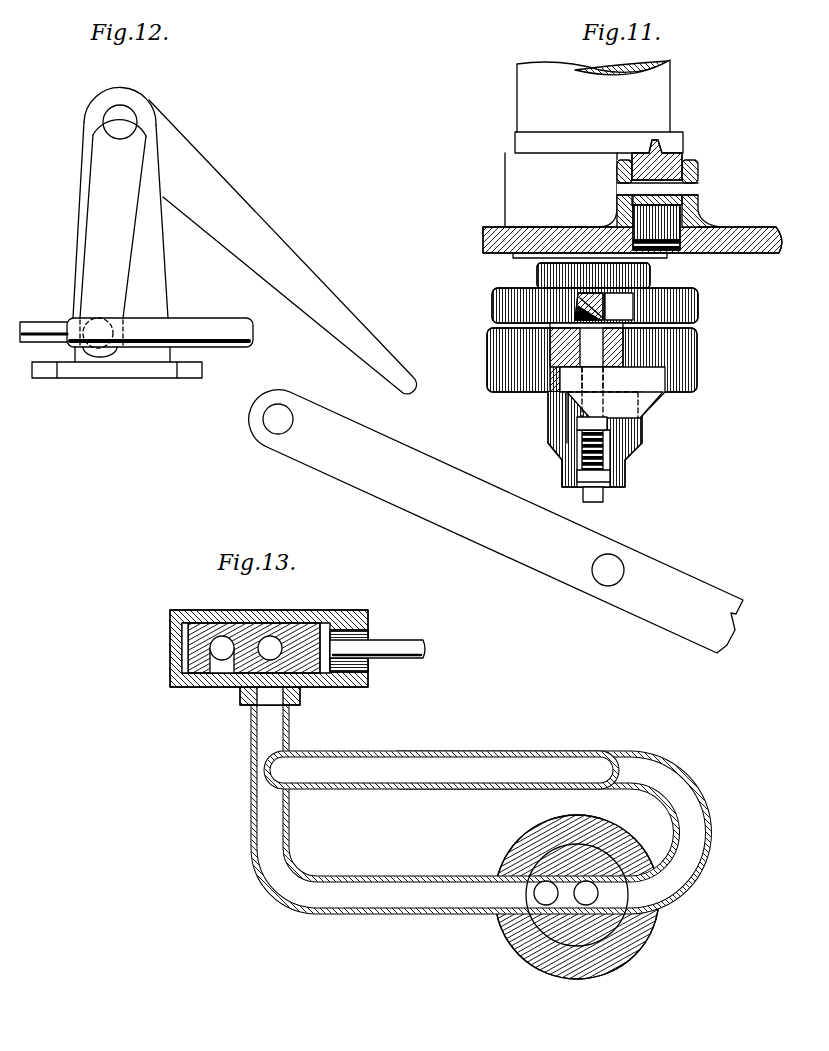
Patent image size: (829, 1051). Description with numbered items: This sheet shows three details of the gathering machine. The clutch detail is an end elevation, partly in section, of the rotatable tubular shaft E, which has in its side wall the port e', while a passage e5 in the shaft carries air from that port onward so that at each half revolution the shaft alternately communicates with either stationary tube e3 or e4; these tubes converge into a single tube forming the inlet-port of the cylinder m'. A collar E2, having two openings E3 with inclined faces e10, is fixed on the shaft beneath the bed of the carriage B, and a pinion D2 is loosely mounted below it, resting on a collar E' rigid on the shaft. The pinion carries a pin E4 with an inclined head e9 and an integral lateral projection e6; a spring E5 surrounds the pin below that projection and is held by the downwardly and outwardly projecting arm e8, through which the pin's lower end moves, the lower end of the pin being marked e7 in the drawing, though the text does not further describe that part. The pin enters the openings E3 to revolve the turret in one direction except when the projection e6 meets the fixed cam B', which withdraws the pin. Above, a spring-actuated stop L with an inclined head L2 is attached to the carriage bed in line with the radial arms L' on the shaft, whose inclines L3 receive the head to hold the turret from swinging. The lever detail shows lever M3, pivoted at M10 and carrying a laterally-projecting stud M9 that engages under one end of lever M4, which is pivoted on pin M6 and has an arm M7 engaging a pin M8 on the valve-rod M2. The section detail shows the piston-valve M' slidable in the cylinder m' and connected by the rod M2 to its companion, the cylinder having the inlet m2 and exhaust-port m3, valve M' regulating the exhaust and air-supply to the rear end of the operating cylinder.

In FIG. 12, the pin M6 is at (124, 114).
In FIG. 12, the arm M7 is at (93, 238).
In FIG. 12, the lever M4 is at (277, 244).
In FIG. 12, the rod M2 is at (197, 328).
In FIG. 13, the rod M2 is at (406, 647).
In FIG. 12, the pin M8 is at (104, 350).
In FIG. 12, the laterally-projecting stud M9 is at (292, 421).
In FIG. 12, the lever M3 is at (453, 526).
In FIG. 12, the pivot M10 is at (596, 563).
In FIG. 11, the carriage B is at (632, 225).
In FIG. 11, the incline L3 is at (617, 152).
In FIG. 11, the radial arm L' is at (599, 106).
In FIG. 11, the spring-actuated stop L is at (669, 184).
In FIG. 11, the inclined head L2 is at (650, 150).
In FIG. 11, the collar E2 is at (652, 283).
In FIG. 11, the inclined head e9 is at (567, 320).
In FIG. 13, the inclined head e9 is at (262, 690).
In FIG. 11, the opening E3 is at (578, 312).
In FIG. 11, the inclined face e10 is at (585, 310).
In FIG. 11, the pinion D2 is at (500, 376).
In FIG. 11, the pin E4 is at (588, 357).
In FIG. 11, the fixed cam B' is at (643, 392).
In FIG. 11, the rotatable tubular shaft E is at (605, 427).
In FIG. 13, the rotatable tubular shaft E is at (575, 898).
In FIG. 11, the spring E5 is at (612, 441).
In FIG. 11, the lateral projection e6 is at (590, 428).
In FIG. 11, the arm e8 is at (588, 477).
In FIG. 11, the stud e7 is at (598, 499).
In FIG. 11, the collar E' is at (518, 418).
In FIG. 13, the stationary tube e3 is at (352, 878).
In FIG. 13, the stationary tube e4 is at (417, 778).
In FIG. 13, the port e' is at (490, 924).
In FIG. 13, the passage e5 is at (536, 906).
In FIG. 13, the cylinder m' is at (252, 648).
In FIG. 13, the piston-valve M' is at (252, 627).
In FIG. 13, the inlet m2 is at (182, 666).
In FIG. 13, the exhaust-port m3 is at (271, 644).